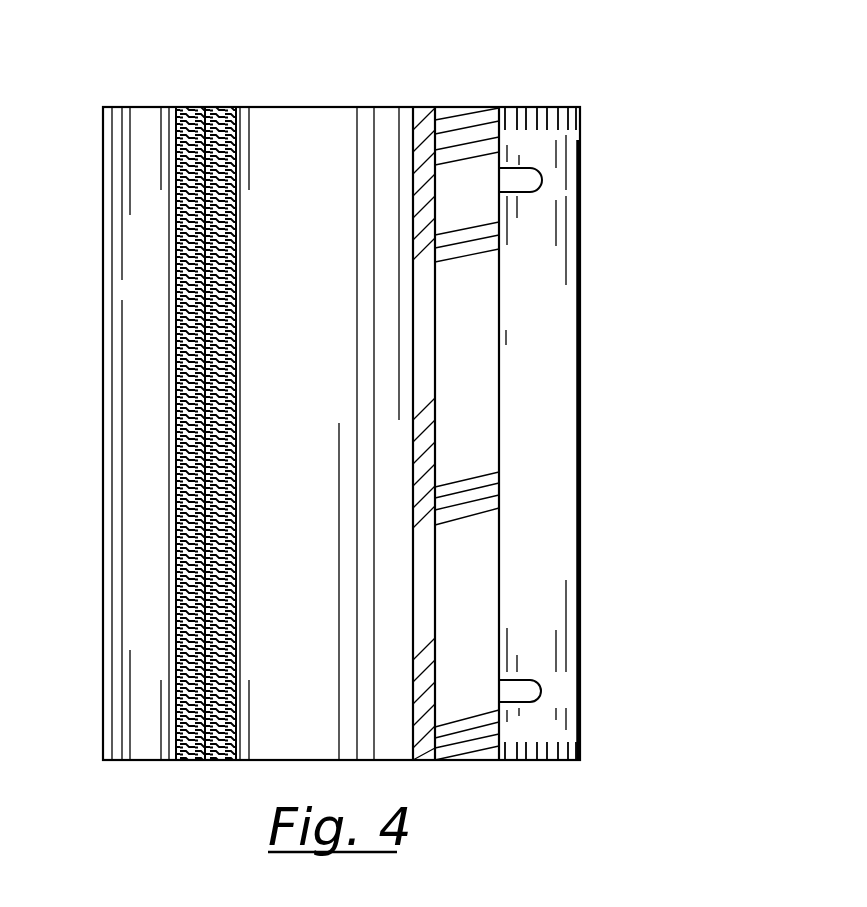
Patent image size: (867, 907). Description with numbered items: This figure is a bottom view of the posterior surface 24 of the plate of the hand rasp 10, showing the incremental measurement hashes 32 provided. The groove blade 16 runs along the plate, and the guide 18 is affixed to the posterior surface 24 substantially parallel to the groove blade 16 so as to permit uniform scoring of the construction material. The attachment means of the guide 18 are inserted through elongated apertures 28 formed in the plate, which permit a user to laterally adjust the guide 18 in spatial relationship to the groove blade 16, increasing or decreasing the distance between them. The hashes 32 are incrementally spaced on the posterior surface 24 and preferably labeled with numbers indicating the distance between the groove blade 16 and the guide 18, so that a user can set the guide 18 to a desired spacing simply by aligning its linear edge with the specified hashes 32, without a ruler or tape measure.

The hand rasp 10 is at (697, 68).
The groove blade 16 is at (190, 433).
The guide 18 is at (500, 400).
The posterior surface 24 is at (316, 407).
The elongated apertures 28 is at (542, 180).
The hashes 32 is at (540, 108).